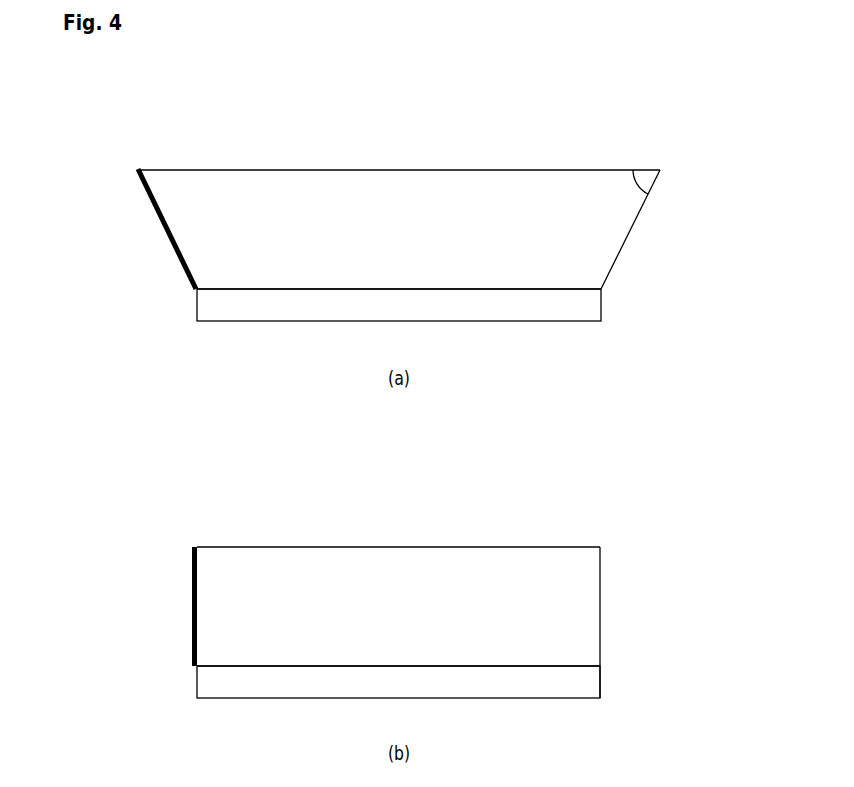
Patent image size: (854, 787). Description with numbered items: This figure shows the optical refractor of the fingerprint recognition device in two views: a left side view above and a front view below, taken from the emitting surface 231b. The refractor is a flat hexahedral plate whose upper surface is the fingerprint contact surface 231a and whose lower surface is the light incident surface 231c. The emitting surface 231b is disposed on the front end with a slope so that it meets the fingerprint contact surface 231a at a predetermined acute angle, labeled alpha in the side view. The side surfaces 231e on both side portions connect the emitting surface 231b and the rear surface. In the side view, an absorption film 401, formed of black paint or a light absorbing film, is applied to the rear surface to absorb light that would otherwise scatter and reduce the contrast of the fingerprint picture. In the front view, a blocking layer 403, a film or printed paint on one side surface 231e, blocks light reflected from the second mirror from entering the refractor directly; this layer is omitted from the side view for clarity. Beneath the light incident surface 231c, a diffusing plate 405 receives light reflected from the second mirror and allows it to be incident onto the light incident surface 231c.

The fingerprint contact surface 231a is at (577, 170).
The emitting surface 231b is at (632, 232).
The light incident surface 231c is at (258, 290).
The side surface 231e is at (436, 382).
The absorption film 401 is at (163, 233).
The blocking layer 403 is at (192, 604).
The diffusing plate 405 is at (197, 301).